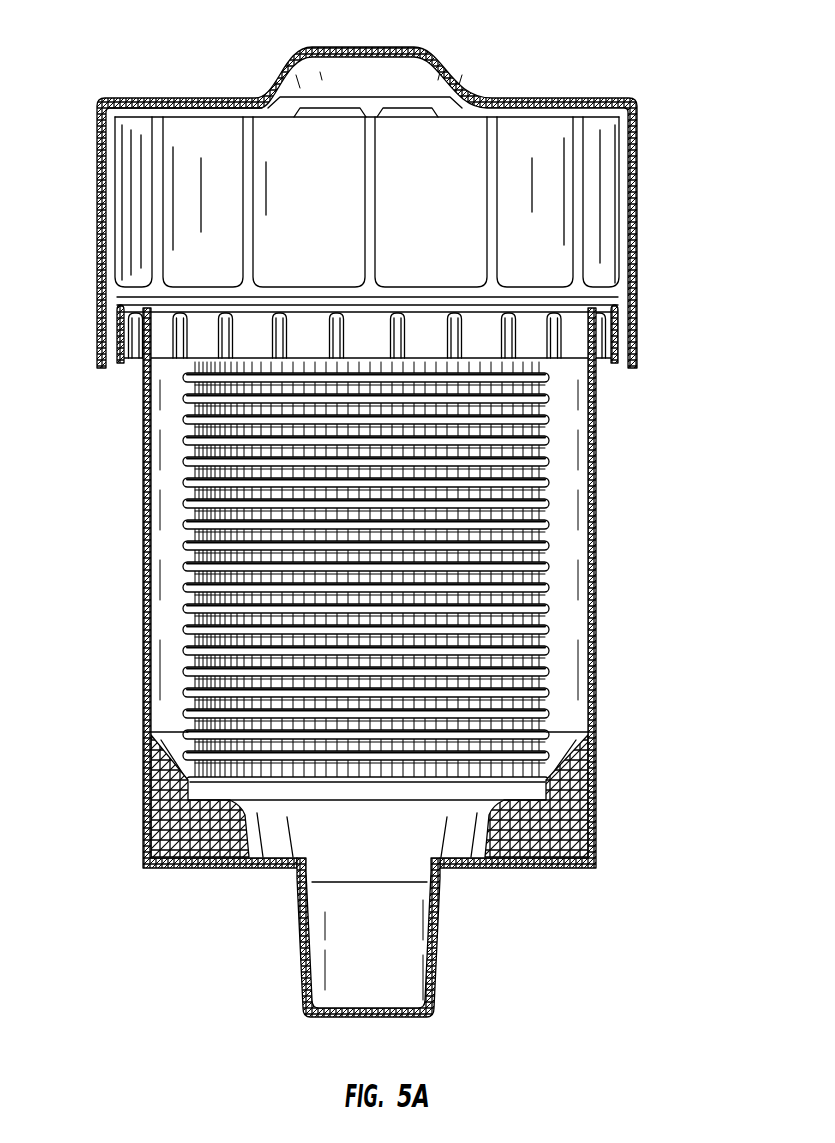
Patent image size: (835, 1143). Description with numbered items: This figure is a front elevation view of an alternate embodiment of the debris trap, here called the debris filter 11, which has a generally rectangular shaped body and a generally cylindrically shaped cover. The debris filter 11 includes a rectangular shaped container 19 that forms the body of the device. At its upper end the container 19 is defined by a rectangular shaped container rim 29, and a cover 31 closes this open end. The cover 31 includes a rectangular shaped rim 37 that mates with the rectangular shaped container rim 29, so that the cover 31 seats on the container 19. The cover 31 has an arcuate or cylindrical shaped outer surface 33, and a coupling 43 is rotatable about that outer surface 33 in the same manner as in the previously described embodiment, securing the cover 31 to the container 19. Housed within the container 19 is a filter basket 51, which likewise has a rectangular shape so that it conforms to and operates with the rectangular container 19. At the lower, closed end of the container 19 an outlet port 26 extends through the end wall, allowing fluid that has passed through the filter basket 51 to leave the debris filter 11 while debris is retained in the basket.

The debris filter 11 is at (380, 532).
The rectangular shaped container 19 is at (423, 662).
The outlet port 26 is at (341, 937).
The rectangular shaped container rim 29 is at (396, 304).
The cover 31 is at (375, 169).
The arcuate or cylindrical shaped outer surface 33 is at (309, 202).
The rectangular shaped rim 37 is at (320, 334).
The coupling 43 is at (329, 207).
The filter basket 51 is at (436, 581).